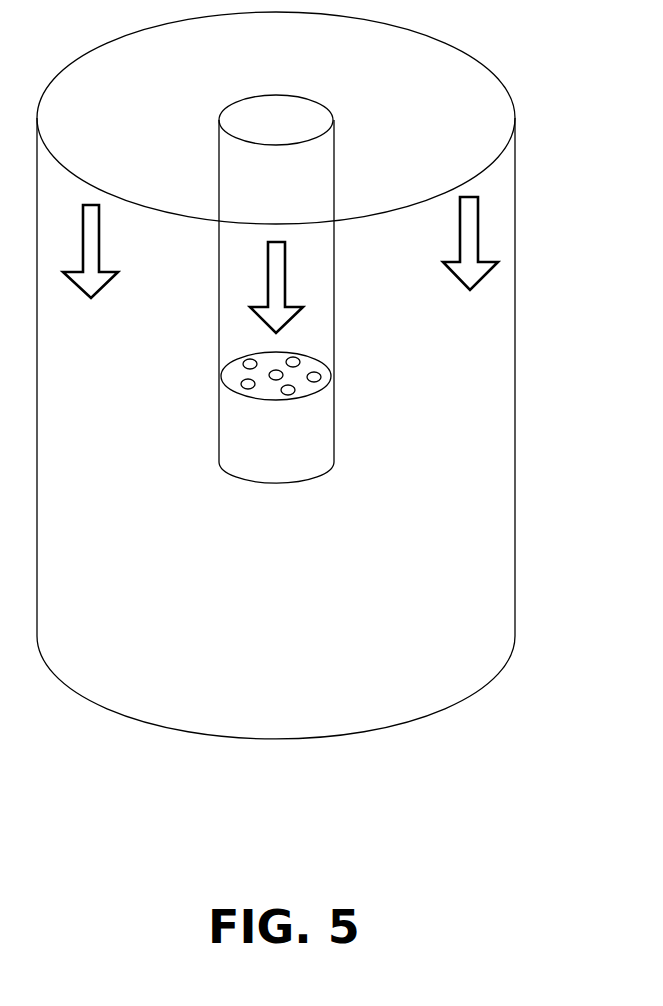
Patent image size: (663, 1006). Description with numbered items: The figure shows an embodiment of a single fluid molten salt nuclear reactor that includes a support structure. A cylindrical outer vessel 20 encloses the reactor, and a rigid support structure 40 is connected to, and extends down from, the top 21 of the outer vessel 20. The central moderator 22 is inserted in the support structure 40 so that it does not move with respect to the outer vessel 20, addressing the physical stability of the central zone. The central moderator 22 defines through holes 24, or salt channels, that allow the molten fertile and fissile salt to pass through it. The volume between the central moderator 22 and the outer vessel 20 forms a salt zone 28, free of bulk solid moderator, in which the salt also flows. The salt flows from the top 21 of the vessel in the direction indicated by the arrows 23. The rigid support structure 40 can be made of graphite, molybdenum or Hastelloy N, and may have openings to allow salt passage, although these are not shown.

The outer vessel 20 is at (516, 220).
The top of the outer vessel 21 is at (132, 82).
The central moderator 22 is at (288, 450).
The arrows 23 is at (96, 256).
The through holes 24 is at (250, 364).
The salt zone 28 is at (276, 428).
The rigid support structure 40 is at (337, 257).